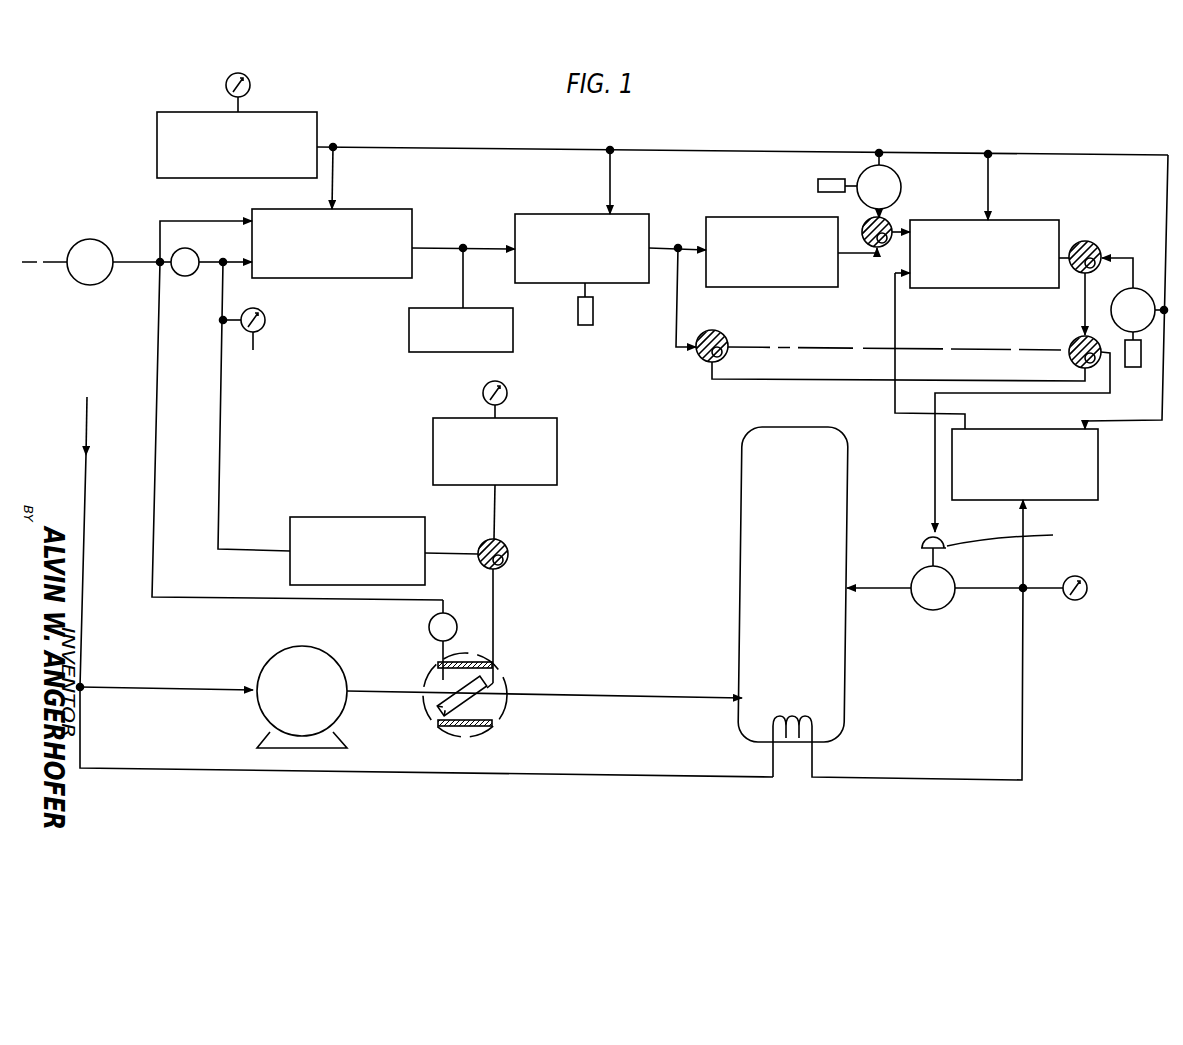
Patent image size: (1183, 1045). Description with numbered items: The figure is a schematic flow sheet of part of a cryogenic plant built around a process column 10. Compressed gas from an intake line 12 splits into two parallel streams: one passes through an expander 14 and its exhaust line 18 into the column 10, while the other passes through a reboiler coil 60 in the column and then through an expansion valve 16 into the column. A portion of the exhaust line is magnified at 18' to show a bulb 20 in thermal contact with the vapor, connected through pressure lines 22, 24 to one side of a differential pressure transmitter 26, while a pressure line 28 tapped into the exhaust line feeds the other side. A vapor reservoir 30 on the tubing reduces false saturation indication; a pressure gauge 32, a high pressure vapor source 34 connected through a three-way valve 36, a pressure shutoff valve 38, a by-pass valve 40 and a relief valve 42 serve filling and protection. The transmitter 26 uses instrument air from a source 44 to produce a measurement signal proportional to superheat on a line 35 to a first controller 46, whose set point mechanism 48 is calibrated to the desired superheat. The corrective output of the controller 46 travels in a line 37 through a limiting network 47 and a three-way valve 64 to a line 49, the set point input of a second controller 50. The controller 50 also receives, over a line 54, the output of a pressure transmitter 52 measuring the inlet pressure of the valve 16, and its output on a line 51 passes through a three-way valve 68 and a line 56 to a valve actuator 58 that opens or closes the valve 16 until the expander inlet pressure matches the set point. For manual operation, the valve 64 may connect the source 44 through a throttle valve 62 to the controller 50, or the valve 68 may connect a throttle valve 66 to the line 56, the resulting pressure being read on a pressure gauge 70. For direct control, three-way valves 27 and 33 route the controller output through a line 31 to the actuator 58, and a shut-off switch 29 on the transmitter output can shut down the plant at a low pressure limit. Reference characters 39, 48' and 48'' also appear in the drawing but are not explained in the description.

The process column 10 is at (842, 708).
The intake line 12 is at (86, 426).
The expander 14 is at (268, 668).
The expansion valve 16 is at (946, 604).
The expander exhaust line 18 is at (544, 672).
The magnified portion of line 18 18' is at (490, 695).
The bulb 20 is at (436, 710).
The pressure line 22 is at (493, 620).
The pressure line 24 is at (221, 447).
The differential pressure transmitter 26 is at (373, 208).
The three-way valve 27 is at (699, 356).
The pressure line 28 is at (152, 526).
The shut-off switch 29 is at (409, 331).
The vapor reservoir 30 is at (330, 518).
The line 31 is at (751, 381).
The pressure gauge 32 is at (243, 340).
The three-way valve 33 is at (1073, 363).
The source of high pressure vapor 34 is at (555, 450).
The line 35 is at (446, 243).
The three-way valve 36 is at (506, 547).
The line 37 is at (688, 246).
The pressure shutoff valve 38 is at (430, 625).
The line 39 is at (790, 346).
The by-pass valve 40 is at (182, 277).
The relief valve 42 is at (103, 246).
The instrument air source 44 is at (320, 114).
The first controller 46 is at (565, 213).
The limiting network 47 is at (723, 217).
The set point mechanism 48 is at (592, 322).
The restriction 48' is at (819, 193).
The restriction 48'' is at (1134, 363).
The line 49 is at (894, 239).
The second controller 50 is at (1041, 220).
The line 51 is at (1064, 262).
The pressure transmitter 52 is at (1098, 457).
The line 54 is at (893, 394).
The line 56 is at (1083, 322).
The valve actuator 58 is at (926, 542).
The reboiler coil 60 is at (774, 726).
The throttle valve 62 is at (900, 180).
The three-way valve 64 is at (889, 220).
The throttle valve 66 is at (1123, 289).
The three-way valve 68 is at (1093, 243).
The pressure gauge 70 is at (1079, 601).